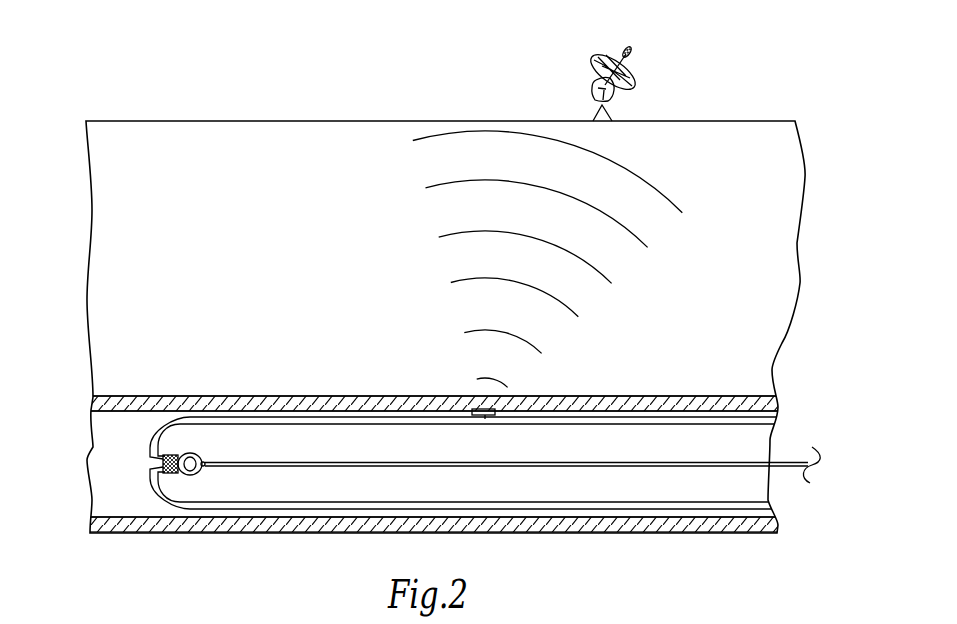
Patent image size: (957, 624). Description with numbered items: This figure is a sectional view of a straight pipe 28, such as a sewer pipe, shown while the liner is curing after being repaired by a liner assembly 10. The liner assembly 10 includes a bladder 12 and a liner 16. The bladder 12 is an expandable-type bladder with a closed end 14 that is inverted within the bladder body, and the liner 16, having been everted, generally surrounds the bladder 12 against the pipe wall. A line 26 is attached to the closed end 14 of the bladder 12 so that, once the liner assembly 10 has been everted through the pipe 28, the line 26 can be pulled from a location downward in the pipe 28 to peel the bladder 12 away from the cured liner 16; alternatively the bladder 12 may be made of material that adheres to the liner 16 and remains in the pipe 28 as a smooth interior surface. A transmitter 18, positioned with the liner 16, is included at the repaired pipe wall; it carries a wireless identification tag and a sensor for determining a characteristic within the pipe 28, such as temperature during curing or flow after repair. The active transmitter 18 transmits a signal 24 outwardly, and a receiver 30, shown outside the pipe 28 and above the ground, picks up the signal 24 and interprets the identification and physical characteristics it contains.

The liner assembly 10 is at (101, 463).
The bladder 12 is at (575, 425).
The closed end 14 is at (177, 455).
The liner 16 is at (154, 427).
The transmitter 18 is at (481, 416).
The signal 24 is at (660, 194).
The line 26 is at (693, 462).
The pipe 28 is at (272, 395).
The receiver 30 is at (632, 72).